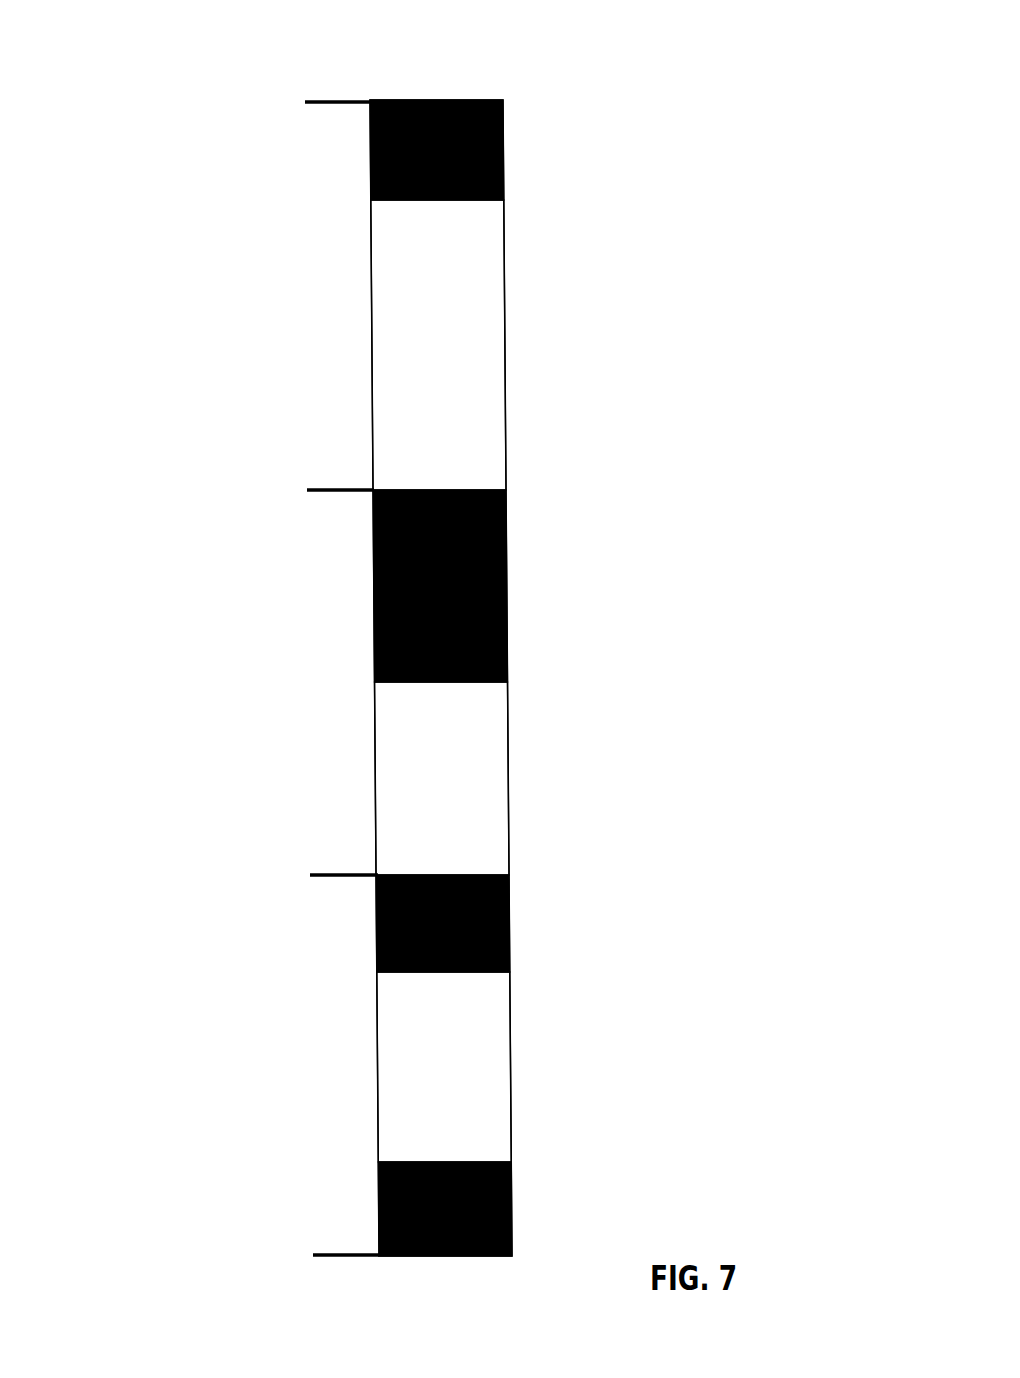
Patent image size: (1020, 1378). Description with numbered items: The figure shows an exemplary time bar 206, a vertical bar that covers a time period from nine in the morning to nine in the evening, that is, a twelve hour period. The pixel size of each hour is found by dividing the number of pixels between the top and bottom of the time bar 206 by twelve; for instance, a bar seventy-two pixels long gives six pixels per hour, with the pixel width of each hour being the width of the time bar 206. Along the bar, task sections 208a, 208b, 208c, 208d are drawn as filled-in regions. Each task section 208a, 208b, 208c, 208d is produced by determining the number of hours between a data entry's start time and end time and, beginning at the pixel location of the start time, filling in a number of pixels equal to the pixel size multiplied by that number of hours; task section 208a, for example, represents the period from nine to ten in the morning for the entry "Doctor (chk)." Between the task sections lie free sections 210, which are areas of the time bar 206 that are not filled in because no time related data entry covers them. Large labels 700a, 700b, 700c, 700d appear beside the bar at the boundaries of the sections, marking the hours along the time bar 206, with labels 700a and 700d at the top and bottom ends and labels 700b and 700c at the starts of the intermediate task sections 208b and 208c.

The time bar 206 is at (419, 632).
The task section 208a is at (528, 157).
The task section 208b is at (531, 560).
The task section 208c is at (533, 928).
The task section 208d is at (537, 1193).
The free section 210 is at (348, 308).
The first digit label 700a is at (213, 106).
The second digit label 700b is at (237, 511).
The third digit label 700c is at (220, 880).
The fourth digit label 700d is at (225, 1240).